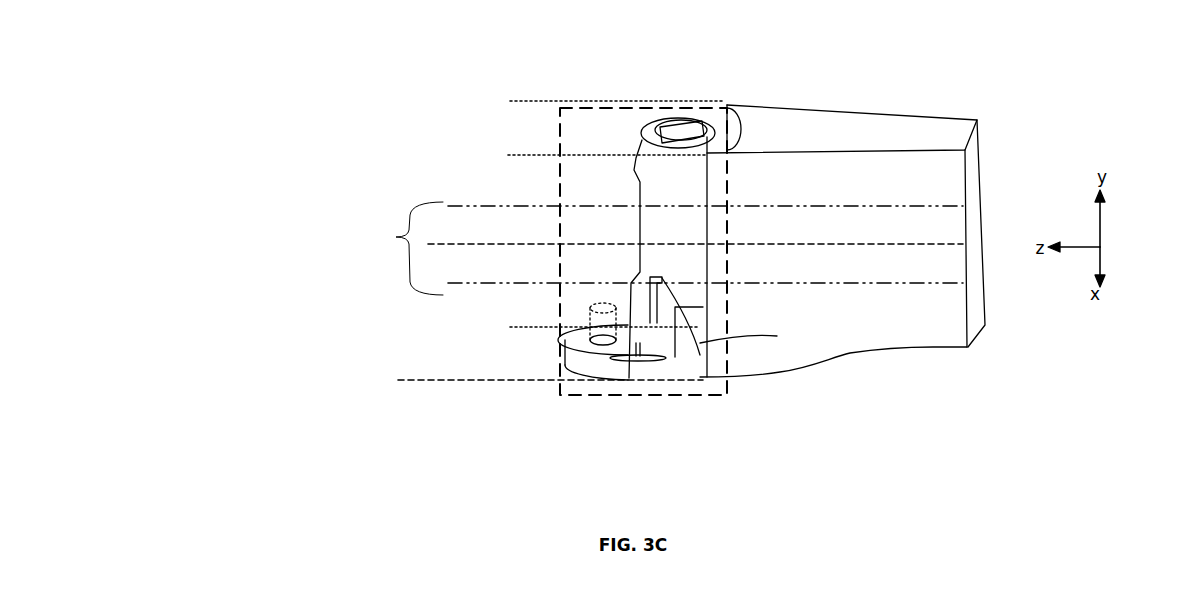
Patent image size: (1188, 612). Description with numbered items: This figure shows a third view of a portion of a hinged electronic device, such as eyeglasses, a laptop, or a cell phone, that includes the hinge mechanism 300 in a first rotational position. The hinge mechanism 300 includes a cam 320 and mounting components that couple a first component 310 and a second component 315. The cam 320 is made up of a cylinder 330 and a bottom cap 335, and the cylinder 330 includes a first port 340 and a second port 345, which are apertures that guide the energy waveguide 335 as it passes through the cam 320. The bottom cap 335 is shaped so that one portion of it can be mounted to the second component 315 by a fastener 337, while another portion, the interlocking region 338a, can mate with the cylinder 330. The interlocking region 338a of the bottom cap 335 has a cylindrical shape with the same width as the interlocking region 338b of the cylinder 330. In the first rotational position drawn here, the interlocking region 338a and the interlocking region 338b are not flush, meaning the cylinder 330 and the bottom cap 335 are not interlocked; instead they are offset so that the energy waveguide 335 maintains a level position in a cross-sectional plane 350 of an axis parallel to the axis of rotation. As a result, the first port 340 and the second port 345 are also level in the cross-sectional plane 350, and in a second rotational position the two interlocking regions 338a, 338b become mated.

The hinge mechanism 300 is at (553, 193).
The first component 310 is at (920, 330).
The second component 315 is at (462, 338).
The cam 320 is at (662, 278).
The cylinder 330 is at (677, 187).
The bottom cap 335 is at (580, 376).
The fastener 337 is at (590, 318).
The interlocking region 338a is at (637, 310).
The interlocking region 338b is at (647, 303).
The first port 340 is at (707, 227).
The second port 345 is at (630, 233).
The cross-sectional plane 350 is at (868, 242).